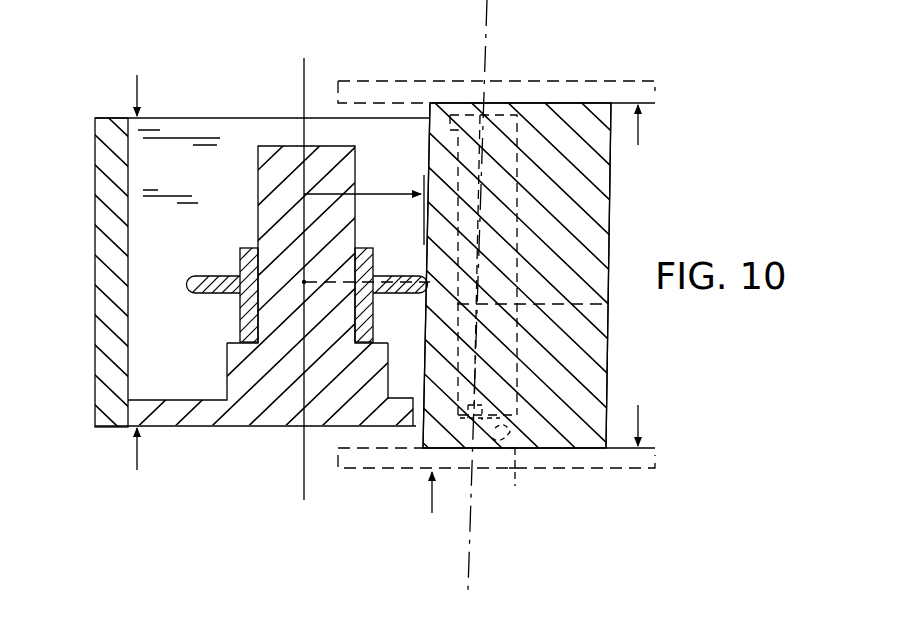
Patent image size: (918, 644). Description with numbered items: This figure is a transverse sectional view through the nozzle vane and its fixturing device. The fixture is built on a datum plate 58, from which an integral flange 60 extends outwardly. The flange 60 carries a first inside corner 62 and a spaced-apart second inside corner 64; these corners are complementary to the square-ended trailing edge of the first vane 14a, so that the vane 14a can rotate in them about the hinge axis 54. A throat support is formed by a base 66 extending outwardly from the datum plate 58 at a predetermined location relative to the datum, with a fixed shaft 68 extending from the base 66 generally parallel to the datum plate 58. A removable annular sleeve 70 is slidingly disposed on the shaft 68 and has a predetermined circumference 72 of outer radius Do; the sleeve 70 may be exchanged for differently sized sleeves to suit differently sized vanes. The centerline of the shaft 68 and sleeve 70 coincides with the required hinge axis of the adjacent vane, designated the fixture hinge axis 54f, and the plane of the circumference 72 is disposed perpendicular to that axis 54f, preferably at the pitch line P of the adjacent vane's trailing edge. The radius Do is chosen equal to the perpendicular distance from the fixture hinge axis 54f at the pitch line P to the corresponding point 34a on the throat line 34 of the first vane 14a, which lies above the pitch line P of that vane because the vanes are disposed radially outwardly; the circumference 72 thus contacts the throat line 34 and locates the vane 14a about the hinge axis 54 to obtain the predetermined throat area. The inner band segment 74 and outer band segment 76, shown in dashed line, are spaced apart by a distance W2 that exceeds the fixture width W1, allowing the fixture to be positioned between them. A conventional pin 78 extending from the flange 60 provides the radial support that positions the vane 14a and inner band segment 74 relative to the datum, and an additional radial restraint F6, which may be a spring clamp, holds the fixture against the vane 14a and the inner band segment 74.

The datum plate 58 is at (95, 242).
The throat line 34 is at (430, 122).
The shaft 68 is at (268, 145).
The base 66 is at (190, 399).
The annular sleeve 70 is at (217, 298).
The circumference 72 is at (184, 278).
The point on throat line 34a is at (422, 272).
The first vane 14a is at (609, 216).
The flange 60 is at (532, 258).
The first inside corner 62 is at (505, 135).
The second inside corner 64 is at (515, 400).
The outer band segment 76 is at (575, 80).
The inner band segment 74 is at (580, 466).
The pin 78 is at (511, 479).
The hinge axis 54 is at (487, 10).
The fixture hinge axis 54f is at (304, 66).
The fixture width W1 is at (138, 88).
The band segment spacing W2 is at (640, 135).
The outer radius Do is at (380, 194).
The pitch line P is at (304, 282).
The radial restraint F6 is at (431, 505).